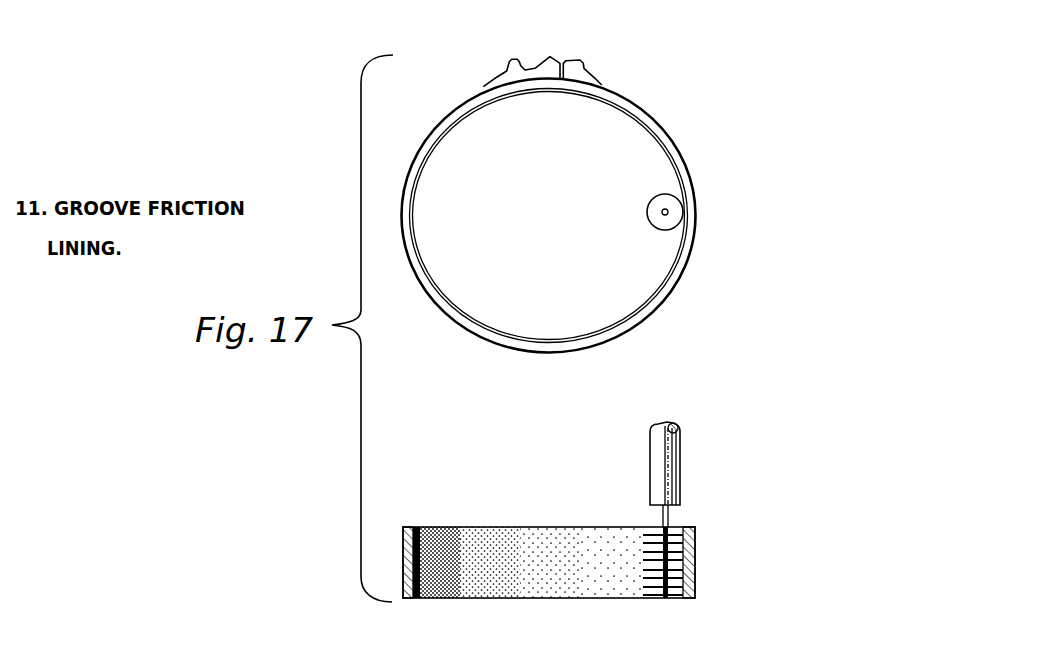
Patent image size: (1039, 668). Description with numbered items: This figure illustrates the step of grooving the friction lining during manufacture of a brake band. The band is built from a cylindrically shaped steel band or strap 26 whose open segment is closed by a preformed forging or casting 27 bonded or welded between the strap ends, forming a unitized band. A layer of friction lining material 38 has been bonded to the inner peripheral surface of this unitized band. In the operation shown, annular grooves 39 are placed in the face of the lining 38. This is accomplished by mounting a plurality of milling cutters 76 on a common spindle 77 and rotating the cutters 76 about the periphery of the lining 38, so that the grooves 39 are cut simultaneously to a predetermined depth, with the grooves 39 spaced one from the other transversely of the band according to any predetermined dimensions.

The band or strap 26 is at (689, 185).
The forging or casting 27 is at (553, 57).
The friction lining material 38 is at (424, 262).
The annular grooves 39 is at (695, 548).
The milling cutters 76 is at (652, 223).
The spindle 77 is at (660, 524).